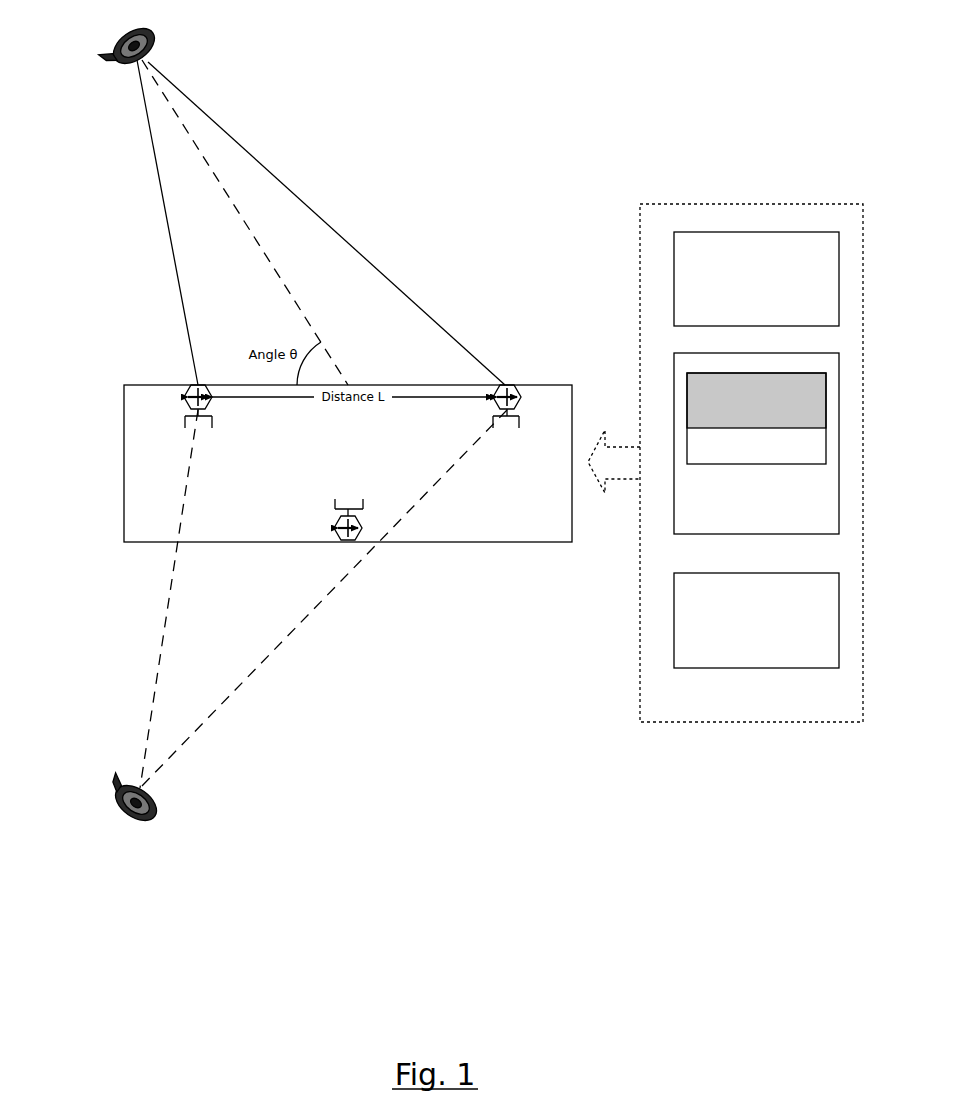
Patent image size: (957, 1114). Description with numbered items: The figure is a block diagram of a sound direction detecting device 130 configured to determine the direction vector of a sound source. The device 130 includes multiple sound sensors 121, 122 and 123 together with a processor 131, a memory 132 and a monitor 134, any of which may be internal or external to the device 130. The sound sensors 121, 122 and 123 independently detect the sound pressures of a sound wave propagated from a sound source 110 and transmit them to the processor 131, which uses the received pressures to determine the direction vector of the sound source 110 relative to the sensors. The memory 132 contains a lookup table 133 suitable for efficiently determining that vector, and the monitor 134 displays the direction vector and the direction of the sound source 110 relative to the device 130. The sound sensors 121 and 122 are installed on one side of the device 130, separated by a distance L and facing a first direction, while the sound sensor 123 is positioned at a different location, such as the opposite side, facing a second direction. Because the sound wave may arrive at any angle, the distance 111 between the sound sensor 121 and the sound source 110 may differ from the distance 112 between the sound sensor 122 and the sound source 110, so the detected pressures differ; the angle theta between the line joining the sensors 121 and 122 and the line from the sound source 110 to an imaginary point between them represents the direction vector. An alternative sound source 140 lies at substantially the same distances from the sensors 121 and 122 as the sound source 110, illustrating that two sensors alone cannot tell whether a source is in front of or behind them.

The sound source 110 is at (168, 47).
The distance 111 is at (164, 222).
The distance 112 is at (326, 223).
The sound sensor 121 is at (176, 397).
The sound sensor 122 is at (521, 384).
The sound sensor 123 is at (362, 537).
The sound direction detecting device 130 is at (148, 461).
The processor 131 is at (756, 279).
The memory 132 is at (756, 443).
The lookup table 133 is at (756, 418).
The monitor 134 is at (756, 620).
The alternative sound source 140 is at (228, 814).